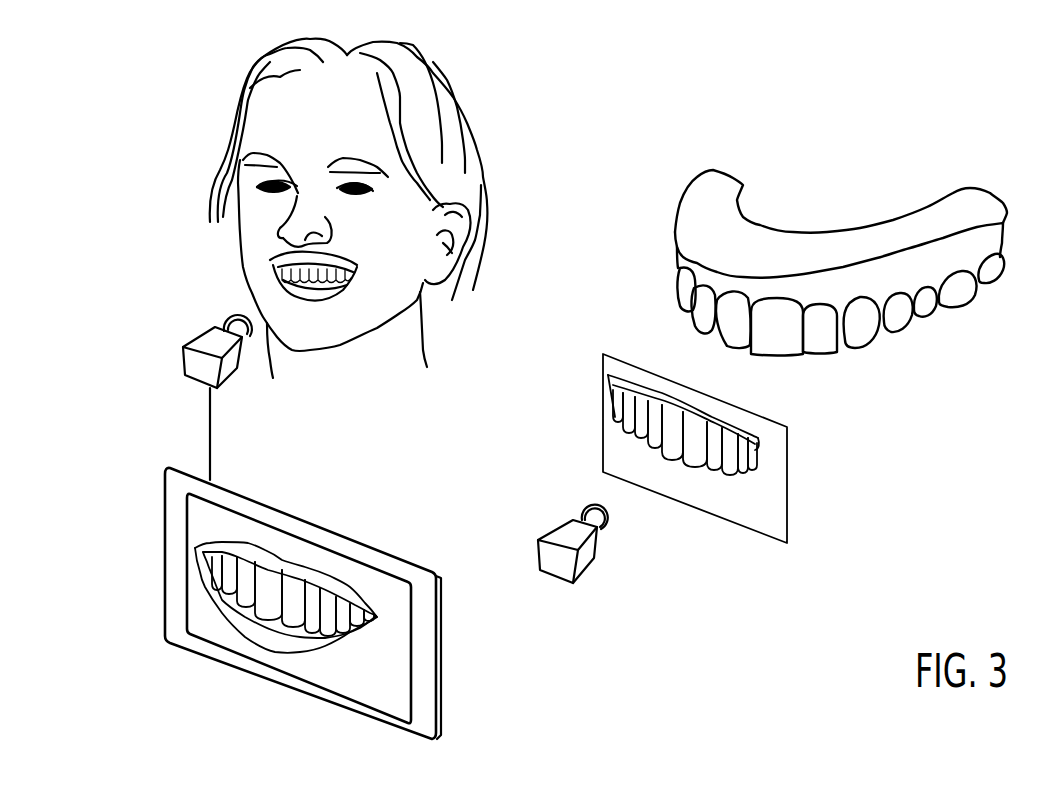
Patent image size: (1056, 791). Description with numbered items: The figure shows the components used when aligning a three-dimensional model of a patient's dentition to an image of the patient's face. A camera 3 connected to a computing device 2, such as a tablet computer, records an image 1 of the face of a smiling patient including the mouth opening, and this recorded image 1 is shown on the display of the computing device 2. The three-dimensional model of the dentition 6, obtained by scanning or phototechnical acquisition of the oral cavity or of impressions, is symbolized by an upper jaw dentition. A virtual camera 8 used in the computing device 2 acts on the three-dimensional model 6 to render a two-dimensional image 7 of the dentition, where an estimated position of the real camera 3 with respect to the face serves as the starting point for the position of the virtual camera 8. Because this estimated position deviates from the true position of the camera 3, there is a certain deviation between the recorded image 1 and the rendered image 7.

The image 1 is at (213, 626).
The computing device 2 is at (442, 711).
The camera 3 is at (233, 375).
The three-dimensional model of the dentition 6 is at (673, 234).
The two-dimensional image 7 is at (602, 440).
The virtual camera 8 is at (592, 567).